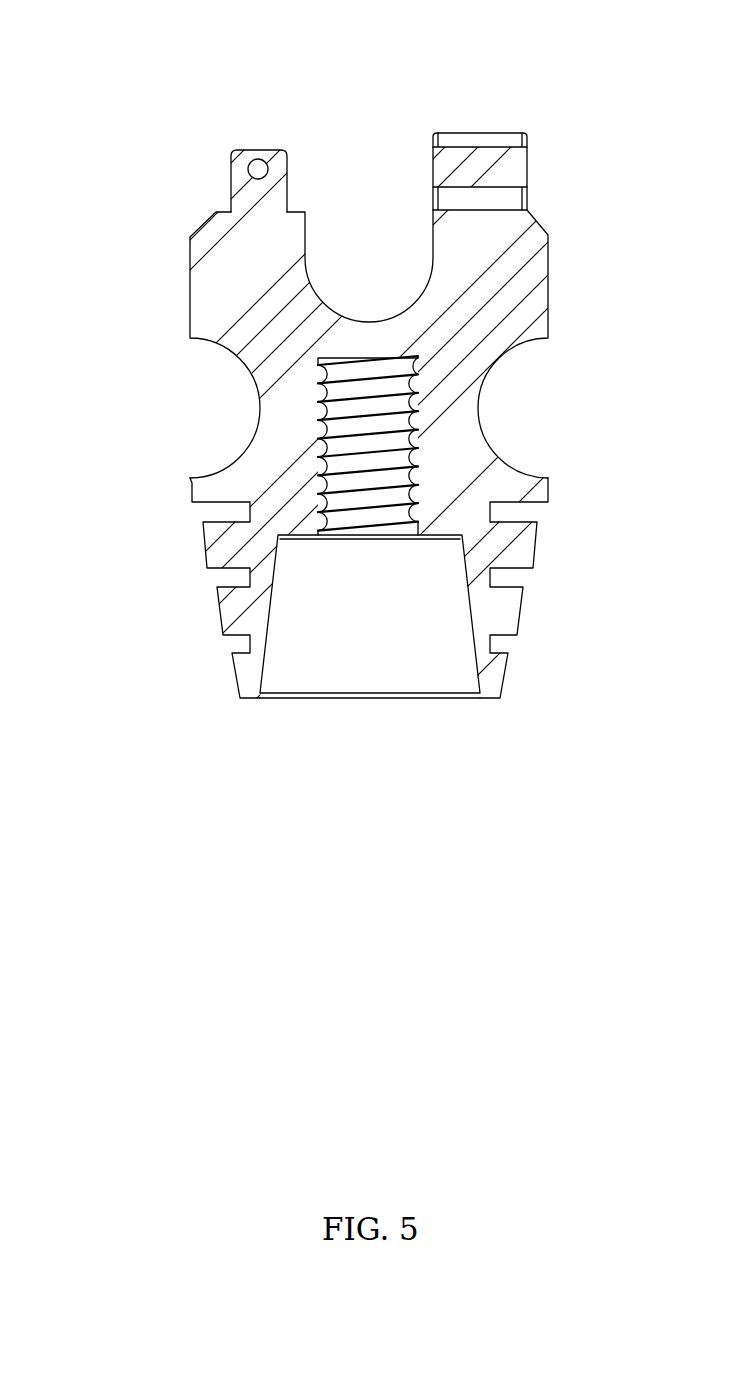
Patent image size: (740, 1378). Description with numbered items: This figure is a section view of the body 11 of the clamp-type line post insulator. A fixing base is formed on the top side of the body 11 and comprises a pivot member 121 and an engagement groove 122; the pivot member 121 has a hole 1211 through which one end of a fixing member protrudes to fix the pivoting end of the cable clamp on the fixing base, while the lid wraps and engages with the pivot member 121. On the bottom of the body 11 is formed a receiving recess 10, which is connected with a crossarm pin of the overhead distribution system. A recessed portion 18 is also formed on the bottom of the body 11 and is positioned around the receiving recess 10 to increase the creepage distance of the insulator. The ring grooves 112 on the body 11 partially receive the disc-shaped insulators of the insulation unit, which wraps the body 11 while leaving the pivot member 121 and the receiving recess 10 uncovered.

The body 11 is at (500, 114).
The pivot member 121 is at (171, 187).
The hole 1211 is at (248, 167).
The engagement groove 122 is at (513, 200).
The annular fins / ribs 112 is at (247, 647).
The receiving recess 10 is at (340, 537).
The recessed portion 18 is at (468, 583).